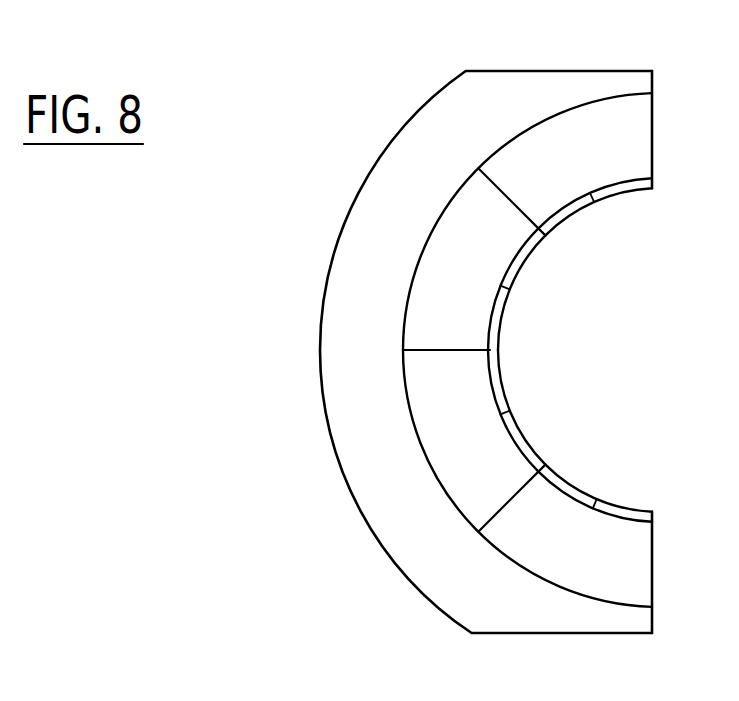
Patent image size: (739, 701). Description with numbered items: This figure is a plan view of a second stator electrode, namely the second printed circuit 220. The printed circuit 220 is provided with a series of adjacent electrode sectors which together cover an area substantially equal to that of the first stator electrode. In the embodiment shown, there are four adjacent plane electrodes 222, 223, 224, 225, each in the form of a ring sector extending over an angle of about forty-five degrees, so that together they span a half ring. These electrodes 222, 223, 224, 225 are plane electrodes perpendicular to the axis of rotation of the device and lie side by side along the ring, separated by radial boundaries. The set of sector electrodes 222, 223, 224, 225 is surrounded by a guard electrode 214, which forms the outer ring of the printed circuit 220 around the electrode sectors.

The second printed circuit 220 is at (368, 138).
The guard electrode 214 is at (492, 592).
The ring sector electrode 222 is at (612, 545).
The ring sector electrode 223 is at (492, 447).
The ring sector electrode 224 is at (473, 298).
The ring sector electrode 225 is at (612, 160).